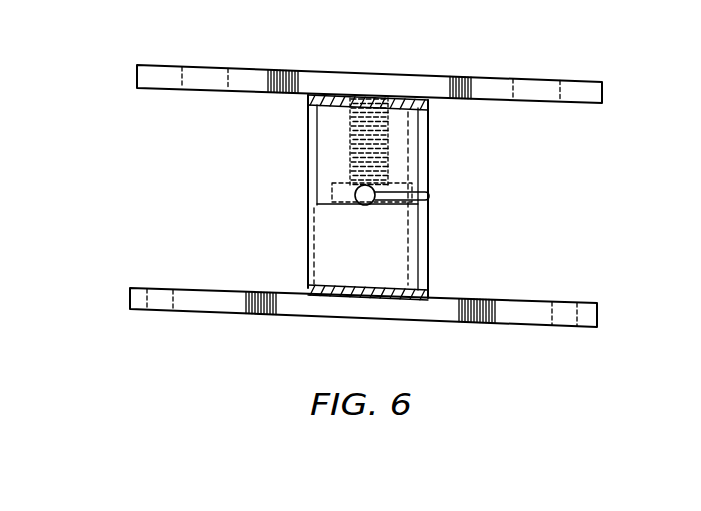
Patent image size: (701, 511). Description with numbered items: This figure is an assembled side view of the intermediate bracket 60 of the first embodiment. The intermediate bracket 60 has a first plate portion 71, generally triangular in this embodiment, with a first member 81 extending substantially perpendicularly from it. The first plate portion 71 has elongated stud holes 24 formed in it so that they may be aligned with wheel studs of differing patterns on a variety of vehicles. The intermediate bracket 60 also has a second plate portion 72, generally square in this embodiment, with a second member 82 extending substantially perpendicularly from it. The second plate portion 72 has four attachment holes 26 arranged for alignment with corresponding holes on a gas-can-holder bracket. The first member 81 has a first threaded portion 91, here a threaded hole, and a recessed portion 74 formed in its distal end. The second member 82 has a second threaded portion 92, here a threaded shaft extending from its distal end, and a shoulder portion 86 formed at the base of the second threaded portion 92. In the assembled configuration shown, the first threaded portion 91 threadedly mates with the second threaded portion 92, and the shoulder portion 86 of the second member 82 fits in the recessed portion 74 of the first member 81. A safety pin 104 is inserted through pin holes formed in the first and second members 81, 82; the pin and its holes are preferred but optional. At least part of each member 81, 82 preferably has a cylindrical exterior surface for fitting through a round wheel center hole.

The intermediate bracket 60 is at (88, 163).
The first plate portion 71 is at (369, 62).
The second plate portion 72 is at (361, 335).
The stud holes 24 is at (190, 83).
The attachment holes 26 is at (145, 297).
The first member 81 is at (428, 157).
The second member 82 is at (308, 245).
The first threaded portion 91 is at (312, 143).
The second threaded portion 92 is at (348, 124).
The recessed portion 74 is at (328, 212).
The shoulder portion 86 is at (328, 212).
The safety pin 104 is at (350, 206).